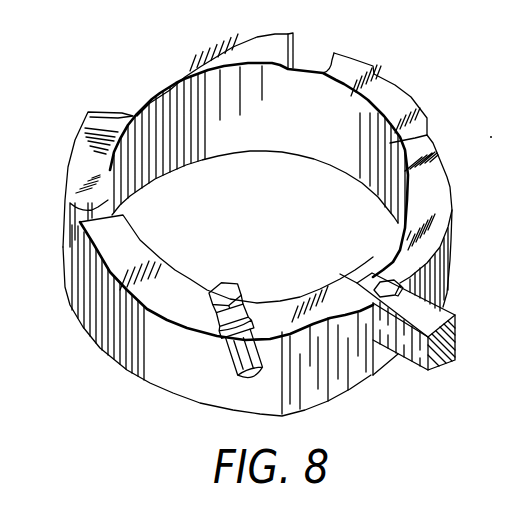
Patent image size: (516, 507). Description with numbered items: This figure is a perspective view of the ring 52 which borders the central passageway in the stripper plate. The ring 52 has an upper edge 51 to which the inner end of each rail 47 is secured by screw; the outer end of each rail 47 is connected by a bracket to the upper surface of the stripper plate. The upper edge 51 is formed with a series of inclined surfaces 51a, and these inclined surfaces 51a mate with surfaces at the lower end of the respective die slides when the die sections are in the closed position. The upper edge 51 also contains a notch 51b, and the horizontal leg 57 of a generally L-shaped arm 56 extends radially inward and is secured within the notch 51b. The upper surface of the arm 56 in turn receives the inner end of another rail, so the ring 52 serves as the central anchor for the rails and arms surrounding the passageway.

The rail 47 is at (238, 358).
The upper edge 51 is at (100, 118).
The inclined surfaces 51a is at (232, 47).
The notch 51b is at (323, 50).
The ring 52 is at (127, 378).
The L-shaped arm 56 is at (418, 371).
The horizontal leg 57 is at (450, 307).